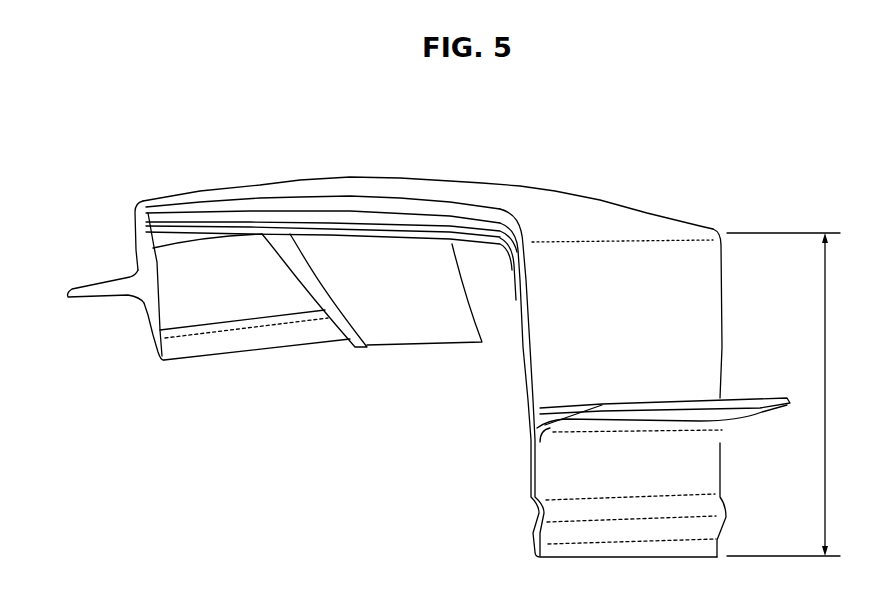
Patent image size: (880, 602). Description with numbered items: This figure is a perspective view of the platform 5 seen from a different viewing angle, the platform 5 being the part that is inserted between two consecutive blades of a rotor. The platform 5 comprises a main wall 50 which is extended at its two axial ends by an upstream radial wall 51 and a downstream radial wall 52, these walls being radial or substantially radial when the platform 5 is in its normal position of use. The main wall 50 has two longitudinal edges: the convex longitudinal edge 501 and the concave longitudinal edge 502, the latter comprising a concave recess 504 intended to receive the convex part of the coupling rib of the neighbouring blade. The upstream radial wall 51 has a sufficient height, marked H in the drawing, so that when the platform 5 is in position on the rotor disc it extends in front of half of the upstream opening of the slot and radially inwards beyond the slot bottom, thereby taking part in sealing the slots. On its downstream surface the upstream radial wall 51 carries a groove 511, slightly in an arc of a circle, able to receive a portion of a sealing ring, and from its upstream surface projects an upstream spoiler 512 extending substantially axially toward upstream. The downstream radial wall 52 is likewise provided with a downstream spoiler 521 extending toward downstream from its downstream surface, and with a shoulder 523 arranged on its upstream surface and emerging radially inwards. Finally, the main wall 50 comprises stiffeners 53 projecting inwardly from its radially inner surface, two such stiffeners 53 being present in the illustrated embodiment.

The platform 5 is at (268, 495).
The main wall 50 is at (483, 181).
The convex longitudinal edge 501 is at (556, 185).
The concave longitudinal edge 502 is at (378, 208).
The concave recess 504 is at (310, 217).
The upstream radial wall 51 is at (647, 331).
The groove 511 is at (520, 524).
The upstream spoiler 512 is at (683, 412).
The downstream radial wall 52 is at (141, 235).
The downstream spoiler 521 is at (105, 292).
The shoulder 523 is at (195, 339).
The stiffener 53 is at (404, 297).